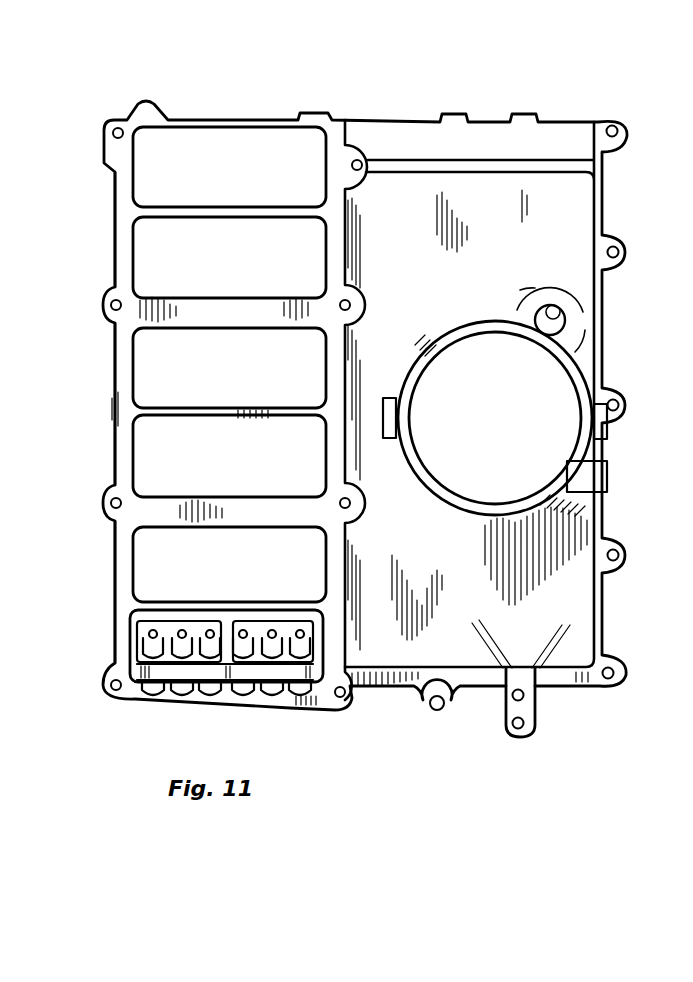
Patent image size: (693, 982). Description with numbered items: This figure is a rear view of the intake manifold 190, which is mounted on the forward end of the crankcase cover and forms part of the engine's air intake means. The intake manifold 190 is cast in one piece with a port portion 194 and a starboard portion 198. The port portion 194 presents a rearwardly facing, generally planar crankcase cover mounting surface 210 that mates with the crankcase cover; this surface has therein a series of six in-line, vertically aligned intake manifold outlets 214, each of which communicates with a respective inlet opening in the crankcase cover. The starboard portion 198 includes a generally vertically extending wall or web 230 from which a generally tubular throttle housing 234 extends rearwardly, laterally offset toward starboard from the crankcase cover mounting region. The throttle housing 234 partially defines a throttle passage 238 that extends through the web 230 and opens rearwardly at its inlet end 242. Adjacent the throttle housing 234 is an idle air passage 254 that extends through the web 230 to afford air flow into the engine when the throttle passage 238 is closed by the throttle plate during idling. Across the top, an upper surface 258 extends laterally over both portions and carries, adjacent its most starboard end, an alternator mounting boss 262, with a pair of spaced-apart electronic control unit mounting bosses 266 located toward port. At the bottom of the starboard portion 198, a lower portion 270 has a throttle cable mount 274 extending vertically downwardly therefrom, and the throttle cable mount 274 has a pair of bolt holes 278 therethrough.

The intake manifold 190 is at (400, 128).
The port portion 194 is at (115, 243).
The starboard portion 198 is at (600, 205).
The crankcase cover mounting surface 210 is at (338, 240).
The intake manifold outlets 214 is at (243, 207).
The web 230 is at (545, 540).
The throttle housing 234 is at (590, 370).
The throttle passage 238 is at (527, 417).
The inlet end 242 is at (472, 328).
The idle air passage 254 is at (550, 308).
The upper surface 258 is at (572, 122).
The alternator mounting boss 262 is at (537, 113).
The electronic control unit mounting bosses 266 is at (320, 113).
The lower portion 270 is at (377, 721).
The throttle cable mount 274 is at (537, 710).
The bolt holes 278 is at (513, 734).